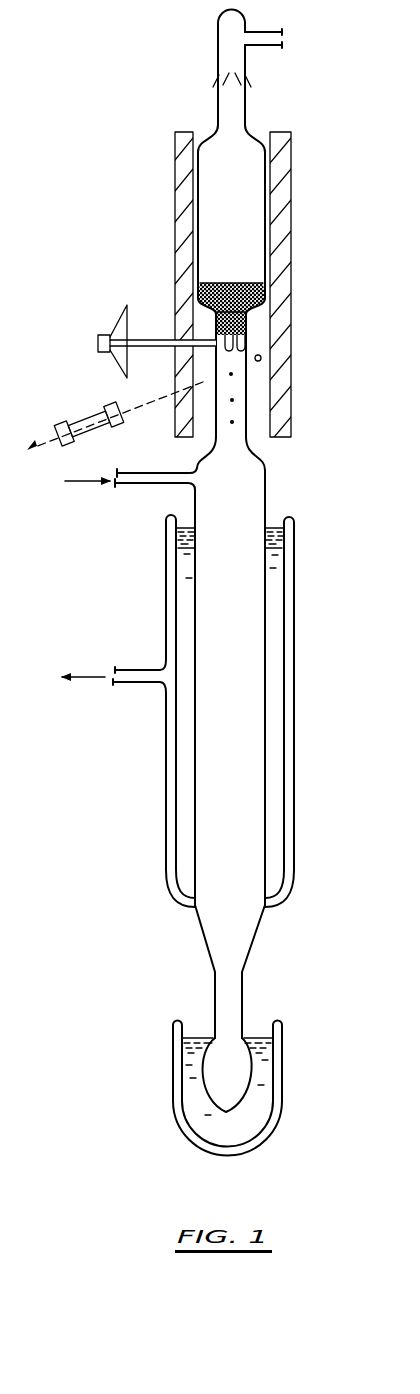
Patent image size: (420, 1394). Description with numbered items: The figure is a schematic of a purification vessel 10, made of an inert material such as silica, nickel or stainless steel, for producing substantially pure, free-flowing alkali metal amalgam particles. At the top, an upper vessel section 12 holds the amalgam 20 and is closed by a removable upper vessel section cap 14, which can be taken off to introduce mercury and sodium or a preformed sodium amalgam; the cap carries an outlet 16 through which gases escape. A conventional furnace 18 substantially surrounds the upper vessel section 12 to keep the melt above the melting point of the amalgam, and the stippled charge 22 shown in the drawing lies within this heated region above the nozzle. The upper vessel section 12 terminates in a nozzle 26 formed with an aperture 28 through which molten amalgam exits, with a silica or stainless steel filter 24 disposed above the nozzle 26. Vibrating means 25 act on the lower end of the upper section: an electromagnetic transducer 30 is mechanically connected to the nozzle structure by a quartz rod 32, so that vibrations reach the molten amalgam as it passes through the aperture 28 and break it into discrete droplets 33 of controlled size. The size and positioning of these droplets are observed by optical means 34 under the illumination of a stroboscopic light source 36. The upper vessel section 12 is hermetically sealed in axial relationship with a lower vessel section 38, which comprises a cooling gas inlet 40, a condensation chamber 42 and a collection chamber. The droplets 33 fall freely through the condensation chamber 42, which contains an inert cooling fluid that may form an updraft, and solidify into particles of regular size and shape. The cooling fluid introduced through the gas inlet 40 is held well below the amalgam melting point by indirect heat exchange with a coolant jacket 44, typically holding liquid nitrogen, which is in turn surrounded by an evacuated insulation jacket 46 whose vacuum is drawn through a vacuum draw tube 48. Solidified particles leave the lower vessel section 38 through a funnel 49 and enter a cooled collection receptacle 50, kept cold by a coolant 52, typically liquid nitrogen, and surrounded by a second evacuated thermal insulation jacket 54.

The purification vessel 10 is at (318, 146).
The upper vessel section 12 is at (222, 188).
The upper vessel section cap 14 is at (218, 48).
The outlet 16 is at (272, 58).
The furnace 18 is at (175, 152).
The amalgam 20 is at (210, 283).
The molten material 22 is at (248, 285).
The filter 24 is at (247, 322).
The vibrating means 25 is at (153, 336).
The nozzle 26 is at (258, 333).
The aperture 28 is at (215, 335).
The electromagnetic transducer 30 is at (100, 335).
The quartz rod 32 is at (168, 350).
The discrete droplets 33 is at (233, 374).
The optical means 34 is at (90, 417).
The stroboscopic light source 36 is at (261, 361).
The lower vessel section 38 is at (222, 563).
The cooling gas inlet 40 is at (142, 487).
The condensation chamber 42 is at (253, 593).
The coolant jacket 44 is at (275, 668).
The evacuated insulation jacket 46 is at (293, 776).
The vacuum draw tube 48 is at (118, 668).
The funnel 49 is at (257, 922).
The collection receptacle 50 is at (240, 1073).
The coolant 52 is at (198, 1038).
The second evacuated thermal insulation jacket 54 is at (180, 1067).